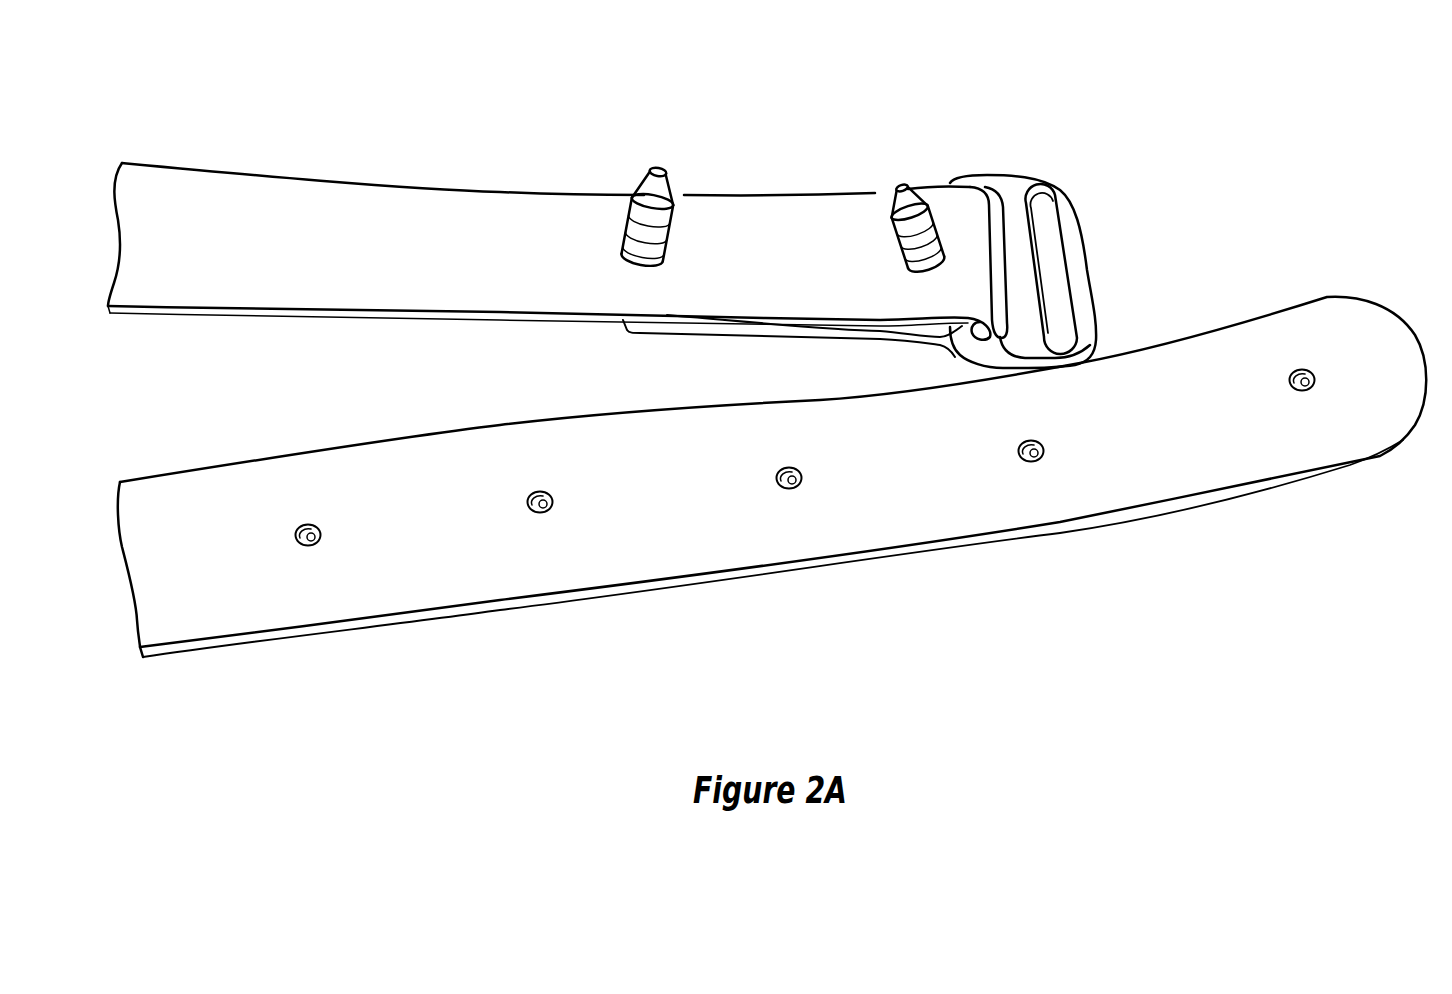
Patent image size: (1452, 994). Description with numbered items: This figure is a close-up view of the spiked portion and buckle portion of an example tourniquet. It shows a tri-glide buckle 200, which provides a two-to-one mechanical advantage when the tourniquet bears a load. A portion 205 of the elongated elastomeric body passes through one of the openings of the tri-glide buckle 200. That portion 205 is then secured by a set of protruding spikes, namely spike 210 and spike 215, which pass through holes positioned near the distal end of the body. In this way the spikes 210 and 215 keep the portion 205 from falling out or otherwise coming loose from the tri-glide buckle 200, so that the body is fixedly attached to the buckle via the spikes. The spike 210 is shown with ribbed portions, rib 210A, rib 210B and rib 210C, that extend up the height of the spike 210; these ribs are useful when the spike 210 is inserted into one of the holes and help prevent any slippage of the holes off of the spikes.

The tri-glide buckle 200 is at (1013, 180).
The portion of the body 205 is at (898, 332).
The spike 210 is at (680, 162).
The rib 210A is at (673, 197).
The rib 210B is at (688, 220).
The rib 210C is at (700, 232).
The spike 215 is at (900, 187).